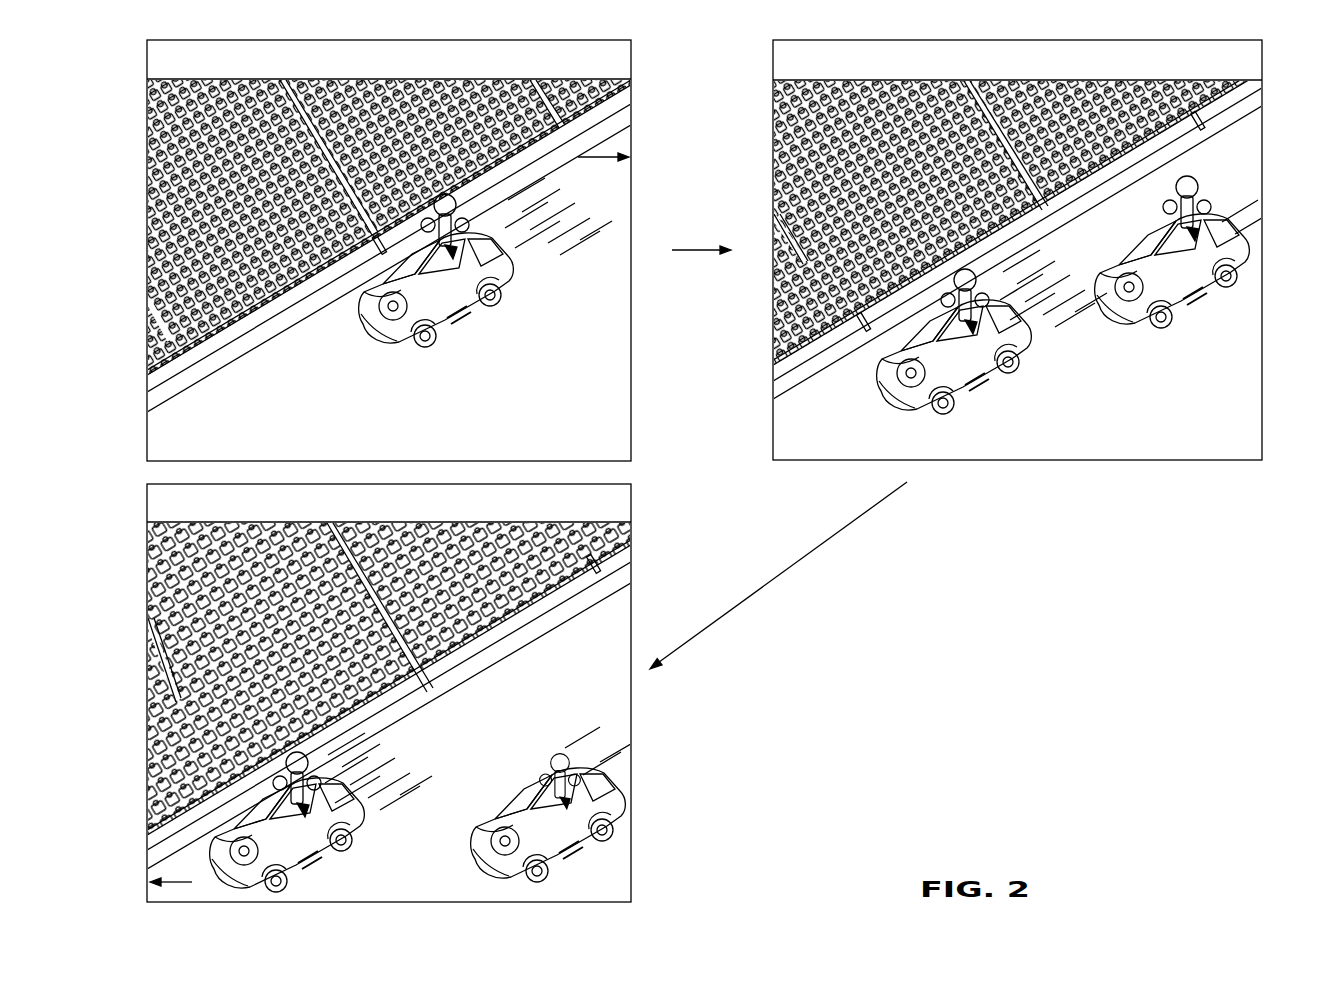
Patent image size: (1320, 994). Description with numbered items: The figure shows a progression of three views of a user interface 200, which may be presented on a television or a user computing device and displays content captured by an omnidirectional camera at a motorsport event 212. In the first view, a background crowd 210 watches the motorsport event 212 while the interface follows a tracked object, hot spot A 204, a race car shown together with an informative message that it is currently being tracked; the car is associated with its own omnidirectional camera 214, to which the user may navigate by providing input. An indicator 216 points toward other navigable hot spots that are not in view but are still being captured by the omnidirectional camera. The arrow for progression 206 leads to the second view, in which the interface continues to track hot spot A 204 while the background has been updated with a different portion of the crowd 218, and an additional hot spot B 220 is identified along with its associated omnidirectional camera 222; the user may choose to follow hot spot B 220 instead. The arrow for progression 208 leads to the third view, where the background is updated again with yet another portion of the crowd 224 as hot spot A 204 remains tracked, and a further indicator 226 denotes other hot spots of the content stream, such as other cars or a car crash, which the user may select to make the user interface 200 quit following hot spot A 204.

The user interface 200 is at (347, 70).
The hot spot A 204 is at (530, 275).
The progression arrow 206 is at (701, 237).
The progression arrow 208 is at (778, 575).
The crowd 210 is at (407, 58).
The motorsport event 212 is at (328, 426).
The 360-degree camera 214 is at (475, 298).
The indicator of other navigable hot spots 216 is at (600, 157).
The crowd 218 is at (1022, 58).
The hot spot B 220 is at (1256, 270).
The 360-degree camera 222 is at (1195, 296).
The crowd 224 is at (590, 518).
The other hot spots of the content stream 226 is at (174, 884).